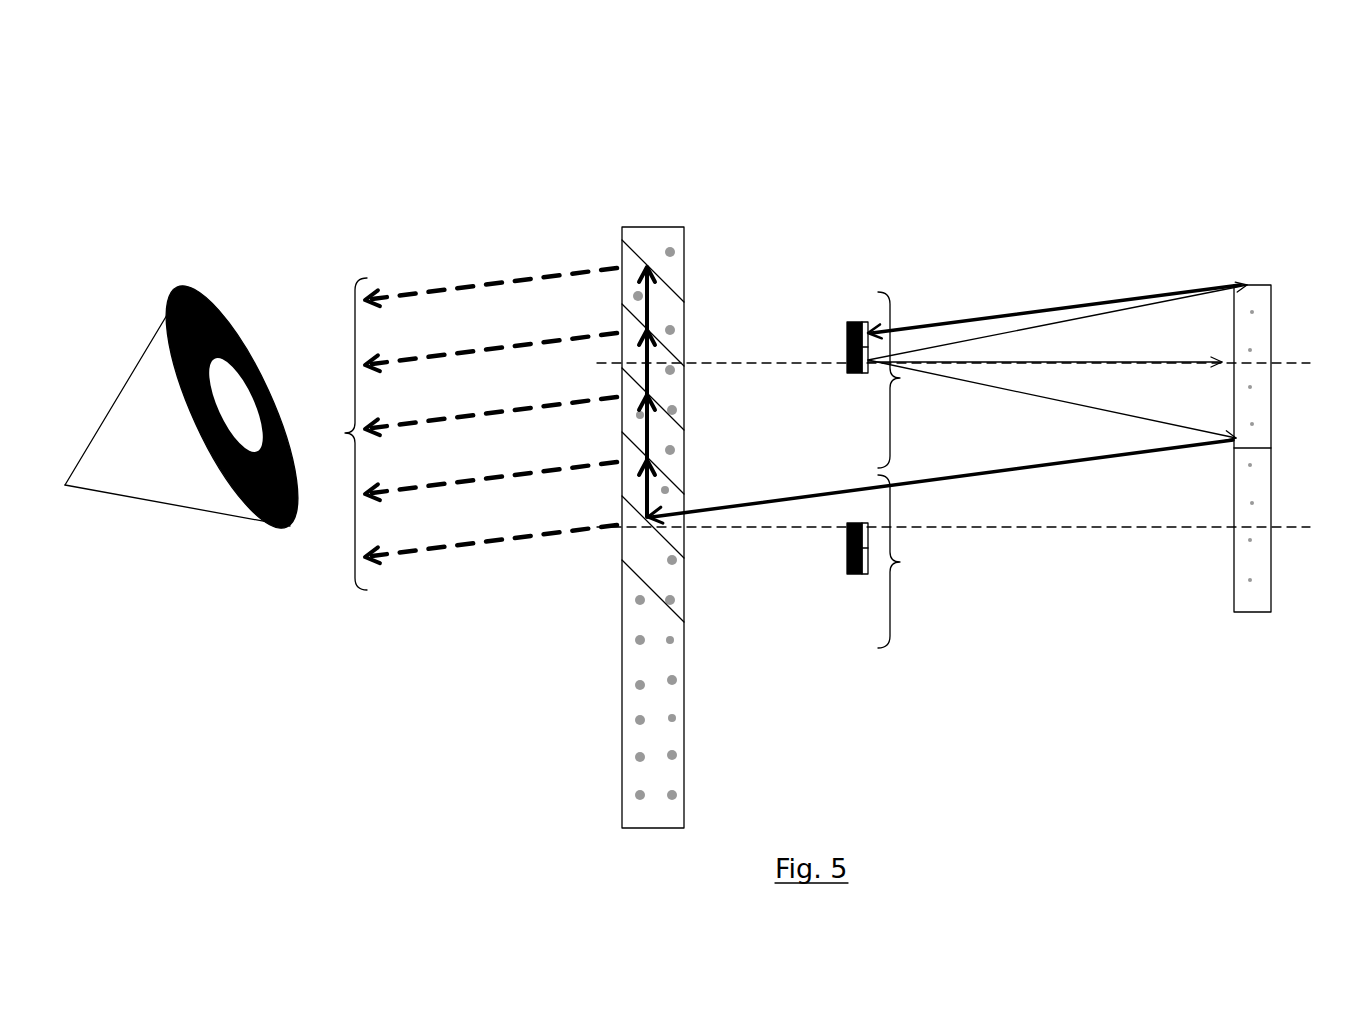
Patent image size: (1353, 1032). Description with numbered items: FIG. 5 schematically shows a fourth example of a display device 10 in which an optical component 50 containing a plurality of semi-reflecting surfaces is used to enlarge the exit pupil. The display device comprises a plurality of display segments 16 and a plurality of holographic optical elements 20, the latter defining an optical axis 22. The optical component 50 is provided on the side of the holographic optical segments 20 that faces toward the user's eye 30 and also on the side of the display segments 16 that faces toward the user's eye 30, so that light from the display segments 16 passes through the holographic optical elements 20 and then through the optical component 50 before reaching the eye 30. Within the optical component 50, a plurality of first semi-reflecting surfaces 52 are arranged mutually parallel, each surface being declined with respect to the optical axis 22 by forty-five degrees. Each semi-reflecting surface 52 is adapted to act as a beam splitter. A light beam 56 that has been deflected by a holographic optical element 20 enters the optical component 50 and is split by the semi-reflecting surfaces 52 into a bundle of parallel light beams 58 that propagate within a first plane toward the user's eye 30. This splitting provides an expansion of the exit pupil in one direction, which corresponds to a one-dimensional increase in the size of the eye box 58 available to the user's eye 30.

The display system 10 is at (1072, 105).
The display segment 16 is at (900, 378).
The holographic optical element 20 is at (1248, 405).
The optical axis 22 is at (972, 447).
The user's eye 30 is at (237, 550).
The optical component 50 is at (672, 715).
The first semi-reflecting surface 52 is at (640, 582).
The light beam 56 is at (722, 502).
The bundle of parallel light beams 58 is at (345, 433).